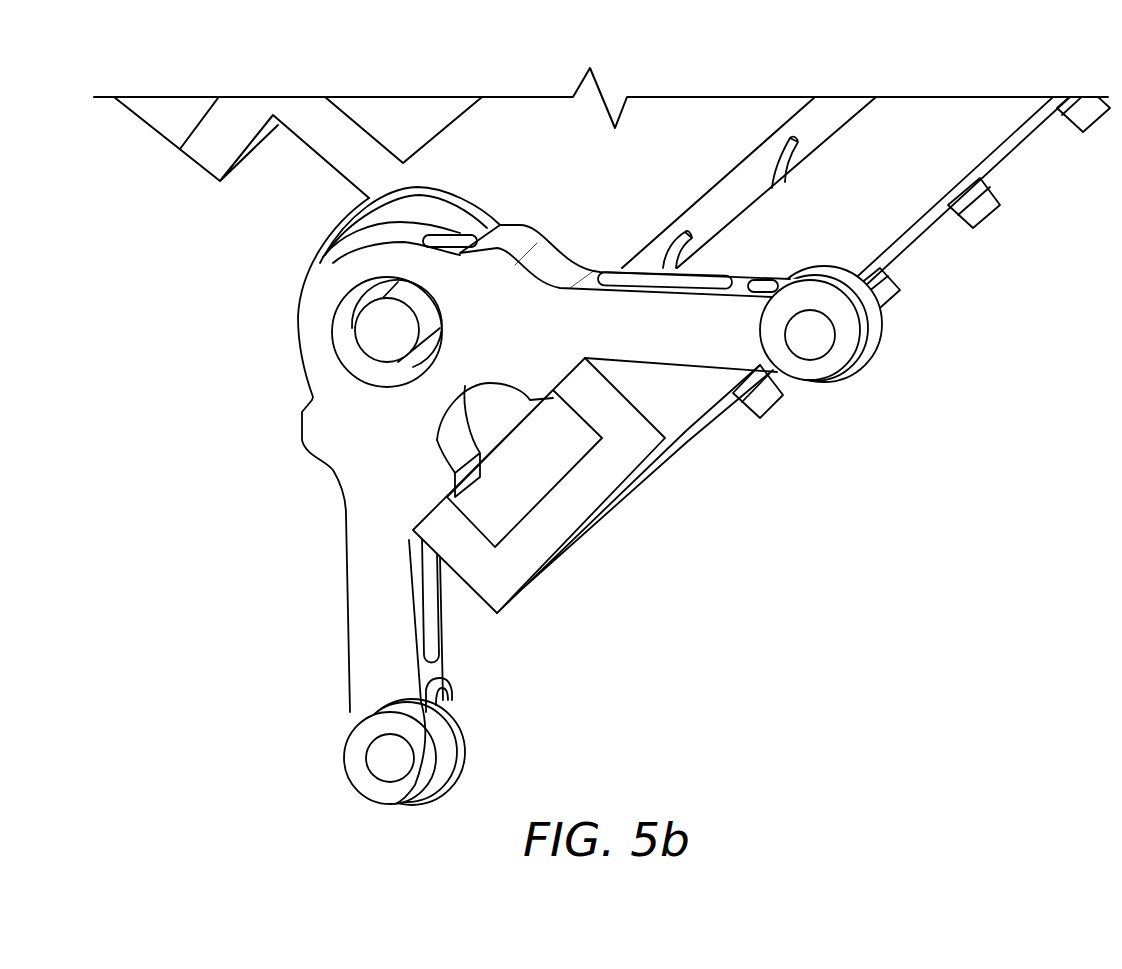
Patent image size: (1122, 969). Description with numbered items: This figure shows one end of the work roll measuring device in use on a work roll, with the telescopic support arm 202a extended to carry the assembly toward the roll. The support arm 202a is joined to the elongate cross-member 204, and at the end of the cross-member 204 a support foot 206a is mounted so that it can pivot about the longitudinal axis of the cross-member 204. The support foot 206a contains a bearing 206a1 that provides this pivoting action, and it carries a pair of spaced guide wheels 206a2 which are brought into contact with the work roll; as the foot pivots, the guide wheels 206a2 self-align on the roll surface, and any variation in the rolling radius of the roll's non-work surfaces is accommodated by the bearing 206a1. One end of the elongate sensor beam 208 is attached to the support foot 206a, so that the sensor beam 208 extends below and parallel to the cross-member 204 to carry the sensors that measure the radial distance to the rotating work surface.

The telescopic support arm 202a is at (323, 150).
The cross-member 204 is at (297, 292).
The bearing 206a1 is at (425, 312).
The guide wheels 206a2 is at (832, 274).
The support foot 206a is at (363, 642).
The sensor beam 208 is at (592, 500).